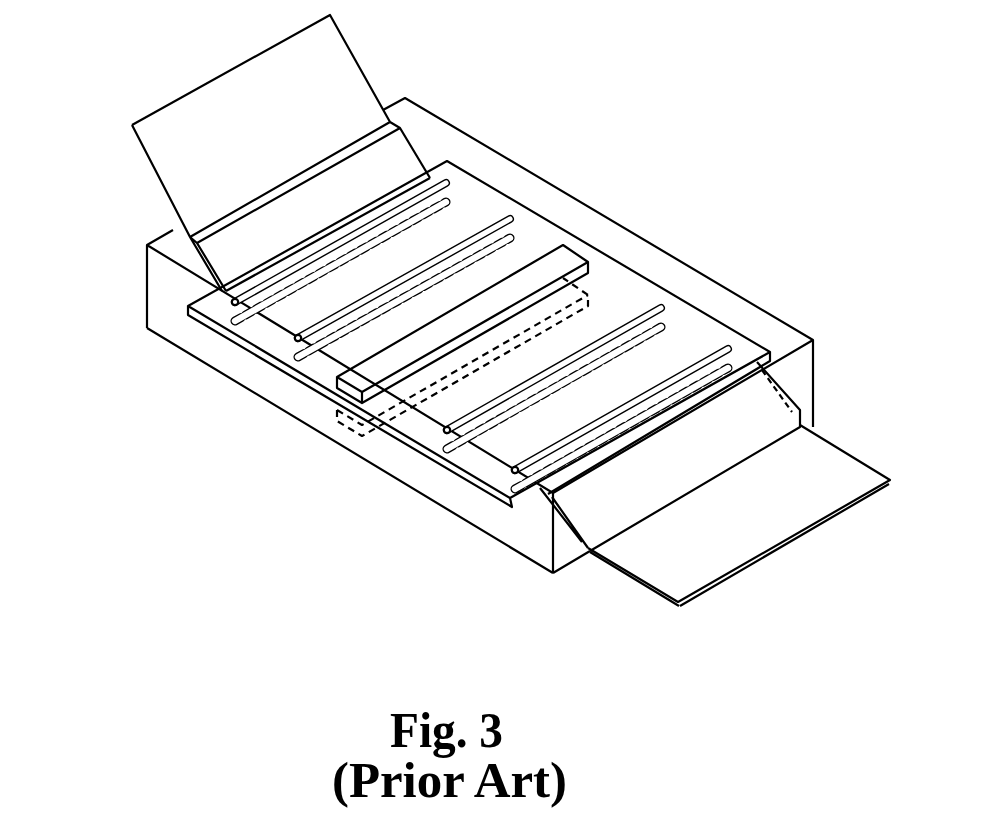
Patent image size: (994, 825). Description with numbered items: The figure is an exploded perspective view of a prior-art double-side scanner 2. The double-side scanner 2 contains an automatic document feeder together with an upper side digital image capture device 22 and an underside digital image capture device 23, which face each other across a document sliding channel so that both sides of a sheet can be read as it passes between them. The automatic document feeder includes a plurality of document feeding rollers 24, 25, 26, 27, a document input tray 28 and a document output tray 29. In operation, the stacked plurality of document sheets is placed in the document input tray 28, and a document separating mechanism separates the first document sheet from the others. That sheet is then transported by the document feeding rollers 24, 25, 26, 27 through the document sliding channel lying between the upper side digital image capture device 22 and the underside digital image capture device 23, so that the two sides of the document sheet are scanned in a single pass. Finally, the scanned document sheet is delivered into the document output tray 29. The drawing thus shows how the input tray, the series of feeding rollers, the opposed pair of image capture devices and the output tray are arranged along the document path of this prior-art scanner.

The double-side scanner 2 is at (592, 172).
The upper side digital image capture device 22 is at (558, 265).
The underside digital image capture device 23 is at (345, 430).
The document feeding roller 24 is at (240, 303).
The document feeding roller 25 is at (305, 337).
The document feeding roller 26 is at (450, 431).
The document feeding roller 27 is at (517, 472).
The document input tray 28 is at (182, 173).
The document output tray 29 is at (667, 563).